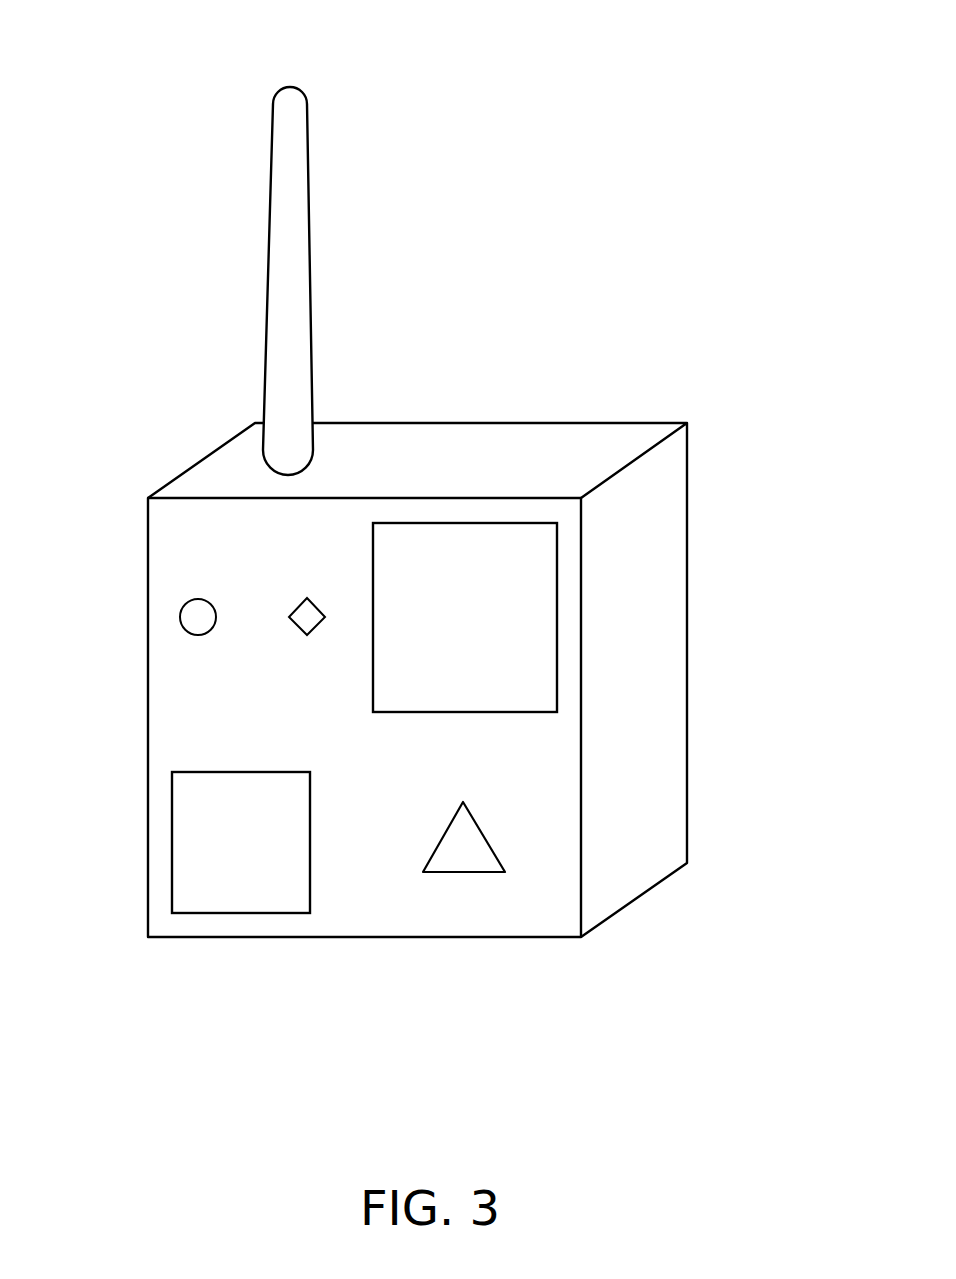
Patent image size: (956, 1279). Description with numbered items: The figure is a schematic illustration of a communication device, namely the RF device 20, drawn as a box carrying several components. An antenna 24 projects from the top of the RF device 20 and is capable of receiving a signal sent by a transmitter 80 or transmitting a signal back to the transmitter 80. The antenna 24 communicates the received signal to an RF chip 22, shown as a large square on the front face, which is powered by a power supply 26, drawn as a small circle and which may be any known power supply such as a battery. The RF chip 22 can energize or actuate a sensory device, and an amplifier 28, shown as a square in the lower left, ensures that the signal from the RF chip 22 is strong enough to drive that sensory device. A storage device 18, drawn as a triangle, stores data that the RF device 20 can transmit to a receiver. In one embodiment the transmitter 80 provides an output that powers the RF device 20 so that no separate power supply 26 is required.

The storage device 18 is at (463, 872).
The RF device 20 is at (686, 775).
The RF chip 22 is at (557, 617).
The antenna 24 is at (290, 125).
The power supply 26 is at (198, 635).
The amplifier 28 is at (238, 913).
The transmitter 80 is at (307, 598).